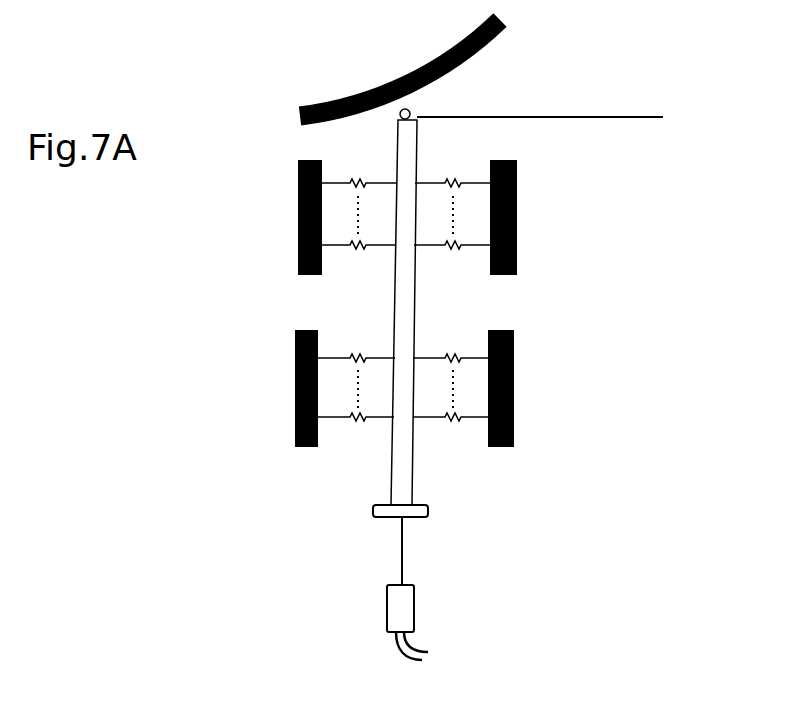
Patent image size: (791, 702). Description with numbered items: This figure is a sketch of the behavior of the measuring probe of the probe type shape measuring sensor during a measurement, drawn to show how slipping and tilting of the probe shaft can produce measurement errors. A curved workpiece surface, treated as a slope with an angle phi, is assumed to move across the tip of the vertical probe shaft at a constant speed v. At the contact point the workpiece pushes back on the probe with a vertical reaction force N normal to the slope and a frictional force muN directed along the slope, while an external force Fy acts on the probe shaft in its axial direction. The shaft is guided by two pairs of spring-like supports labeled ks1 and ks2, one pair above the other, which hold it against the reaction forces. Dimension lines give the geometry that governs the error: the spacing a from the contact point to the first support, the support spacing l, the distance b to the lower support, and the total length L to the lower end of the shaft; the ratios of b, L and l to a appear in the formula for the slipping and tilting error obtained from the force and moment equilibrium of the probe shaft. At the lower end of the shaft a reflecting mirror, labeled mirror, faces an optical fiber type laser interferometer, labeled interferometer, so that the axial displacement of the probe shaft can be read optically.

The constant speed of the slope v is at (383, 83).
The slope angle phi is at (412, 104).
The frictional force muN is at (497, 93).
The vertical reaction force N is at (407, 120).
The external force in the axial direction Fy is at (402, 280).
The upper spring support stiffness ks1 is at (407, 217).
The lower spring support stiffness ks2 is at (404, 388).
The dimension a is at (528, 117).
The dimension l is at (528, 187).
The dimension b is at (558, 117).
The dimension L is at (432, 516).
The reflecting mirror is at (383, 512).
The optical fiber type laser interferometer is at (404, 612).